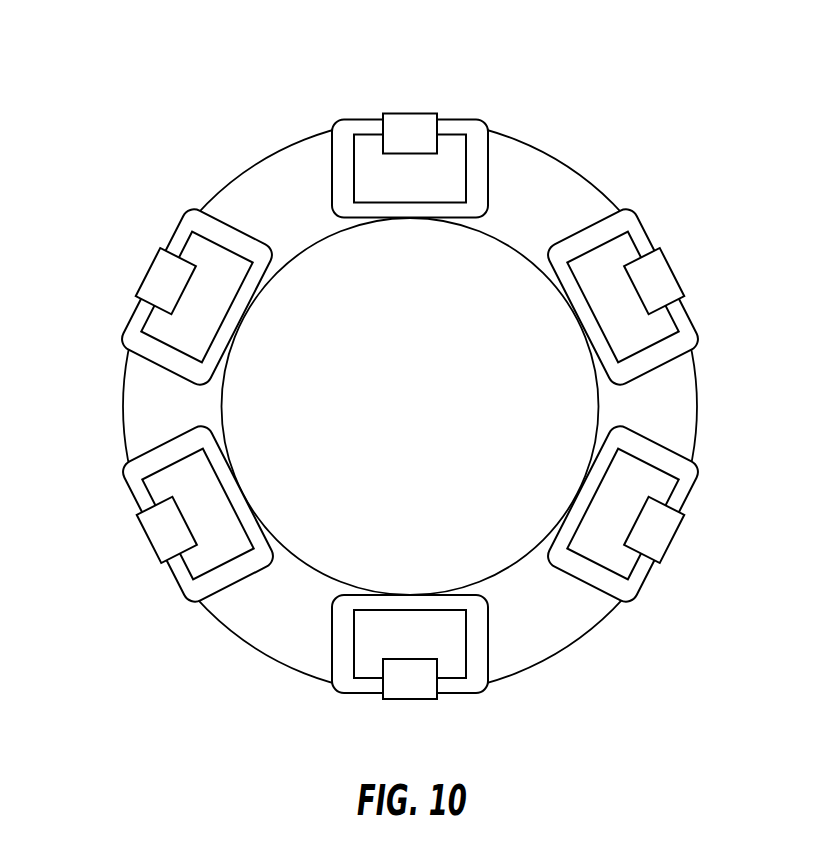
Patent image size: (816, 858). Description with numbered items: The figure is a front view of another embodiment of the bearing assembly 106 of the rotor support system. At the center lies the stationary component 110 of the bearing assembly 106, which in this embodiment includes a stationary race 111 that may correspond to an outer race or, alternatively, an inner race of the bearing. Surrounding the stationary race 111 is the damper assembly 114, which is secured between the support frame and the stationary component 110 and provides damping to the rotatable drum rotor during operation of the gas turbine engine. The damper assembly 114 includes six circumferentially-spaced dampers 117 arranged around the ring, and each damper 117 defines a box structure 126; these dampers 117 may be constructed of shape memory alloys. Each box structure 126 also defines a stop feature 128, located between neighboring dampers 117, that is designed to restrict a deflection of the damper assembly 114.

The bearing assembly 106 is at (410, 359).
The damper assembly 114 is at (617, 190).
The damper 117 is at (330, 120).
The stationary component 110 is at (410, 406).
The stationary race 111 is at (448, 421).
The box structure 126 is at (160, 457).
The stop feature 128 is at (696, 352).